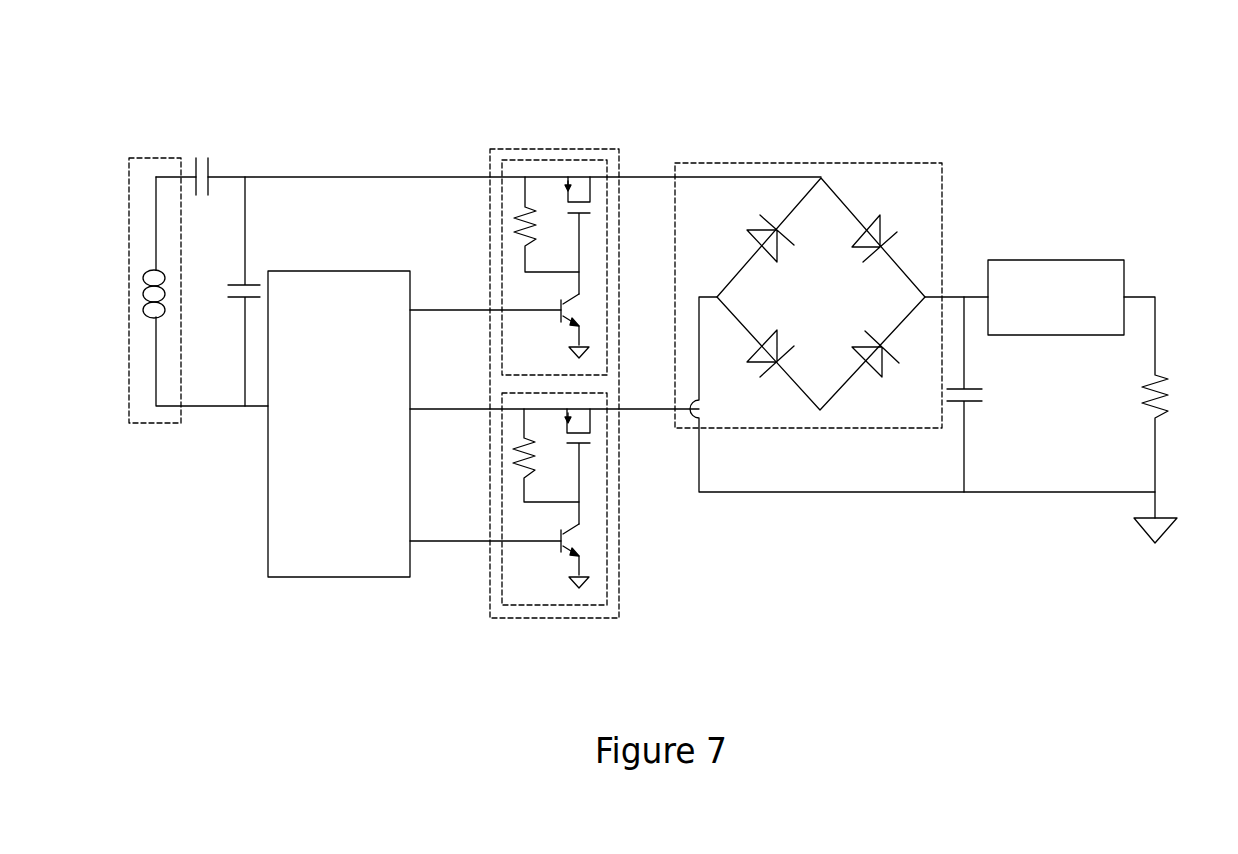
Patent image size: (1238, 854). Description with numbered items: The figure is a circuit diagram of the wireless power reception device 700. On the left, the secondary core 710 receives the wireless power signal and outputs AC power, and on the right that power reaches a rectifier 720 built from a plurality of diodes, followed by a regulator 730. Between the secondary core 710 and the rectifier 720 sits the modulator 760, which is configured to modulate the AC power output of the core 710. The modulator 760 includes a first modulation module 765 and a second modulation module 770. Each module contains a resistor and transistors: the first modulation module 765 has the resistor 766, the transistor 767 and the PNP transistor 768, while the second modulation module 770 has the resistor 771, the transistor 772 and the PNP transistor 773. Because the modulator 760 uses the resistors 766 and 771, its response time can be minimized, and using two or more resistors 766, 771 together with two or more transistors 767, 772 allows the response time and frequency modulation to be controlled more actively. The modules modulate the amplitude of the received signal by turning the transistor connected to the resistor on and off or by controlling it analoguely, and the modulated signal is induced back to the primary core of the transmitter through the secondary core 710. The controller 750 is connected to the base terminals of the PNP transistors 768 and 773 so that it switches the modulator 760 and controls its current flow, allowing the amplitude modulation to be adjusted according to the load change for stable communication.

The wireless power reception device 700 is at (846, 70).
The secondary core 710 is at (167, 158).
The rectifier 720 is at (818, 162).
The regulator 730 is at (1104, 260).
The controller 750 is at (344, 270).
The modulator 760 is at (500, 148).
The first modulation module 765 is at (563, 160).
The resistor 766 is at (508, 224).
The transistor 767 is at (592, 209).
The PNP transistor 768 is at (580, 305).
The second modulation module 770 is at (563, 618).
The resistor 771 is at (508, 455).
The transistor 772 is at (592, 440).
The PNP transistor 773 is at (580, 540).